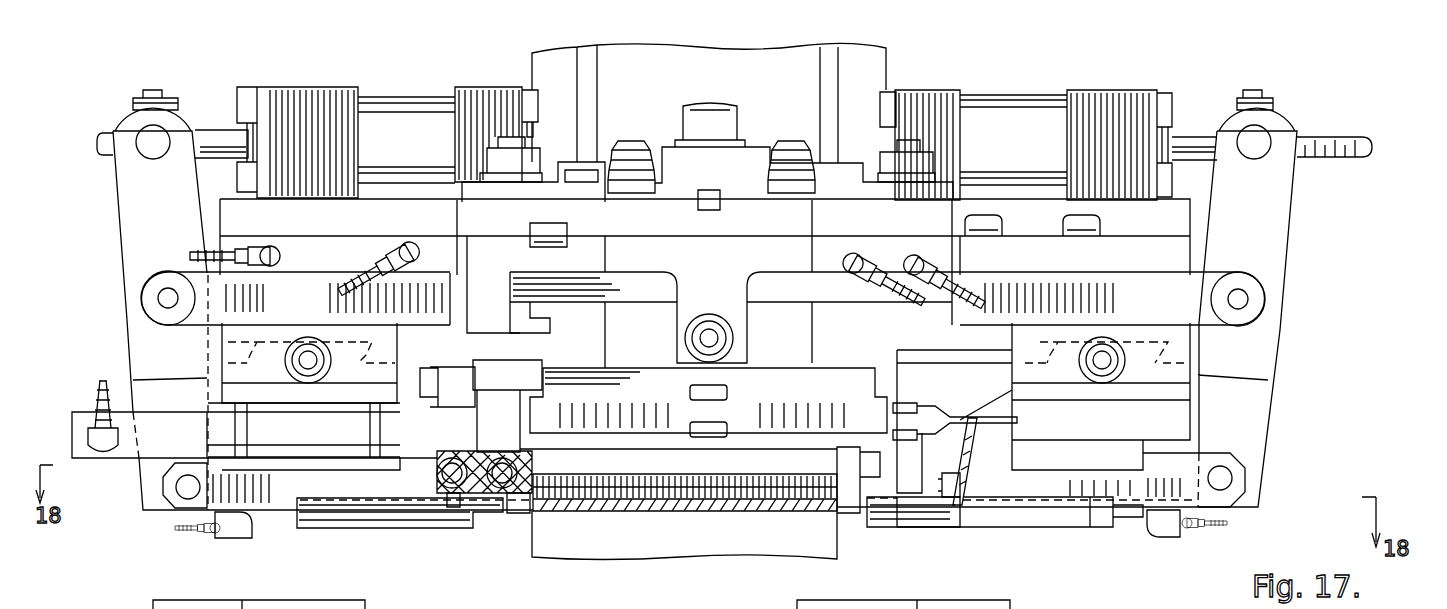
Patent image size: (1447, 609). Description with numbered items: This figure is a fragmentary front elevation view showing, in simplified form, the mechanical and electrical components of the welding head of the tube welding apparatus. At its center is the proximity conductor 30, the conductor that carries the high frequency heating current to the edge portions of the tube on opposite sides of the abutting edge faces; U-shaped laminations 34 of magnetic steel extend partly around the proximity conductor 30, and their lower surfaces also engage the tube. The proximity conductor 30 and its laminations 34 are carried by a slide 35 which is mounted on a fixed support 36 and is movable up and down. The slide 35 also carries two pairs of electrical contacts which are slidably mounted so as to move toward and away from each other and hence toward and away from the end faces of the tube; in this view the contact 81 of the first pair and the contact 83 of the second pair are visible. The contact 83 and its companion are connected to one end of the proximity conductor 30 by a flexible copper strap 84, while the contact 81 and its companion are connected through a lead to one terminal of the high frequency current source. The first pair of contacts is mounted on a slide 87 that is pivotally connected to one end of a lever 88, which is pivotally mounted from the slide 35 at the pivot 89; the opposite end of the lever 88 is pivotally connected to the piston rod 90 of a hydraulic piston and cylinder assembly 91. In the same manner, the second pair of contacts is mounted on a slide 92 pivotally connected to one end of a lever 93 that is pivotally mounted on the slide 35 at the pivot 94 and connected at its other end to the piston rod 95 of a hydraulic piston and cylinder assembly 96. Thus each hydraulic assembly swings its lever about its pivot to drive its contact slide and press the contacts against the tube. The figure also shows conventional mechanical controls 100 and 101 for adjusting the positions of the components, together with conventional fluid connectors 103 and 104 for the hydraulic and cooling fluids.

The proximity conductor 30 is at (873, 513).
The U-shaped laminations 34 is at (790, 476).
The slide 35 is at (826, 178).
The fixed support 36 is at (873, 72).
The electrical contact 81 is at (382, 528).
The electrical contact 83 is at (1000, 515).
The flexible copper strap 84 is at (968, 463).
The slide 87 is at (273, 504).
The lever 88 is at (150, 495).
The pivot 89 is at (160, 300).
The piston rod 90 is at (213, 137).
The hydraulic piston and cylinder assembly 91 is at (385, 128).
The slide 92 is at (1133, 500).
The lever 93 is at (1262, 448).
The pivot 94 is at (1248, 300).
The piston rod 95 is at (1193, 145).
The hydraulic piston and cylinder assembly 96 is at (1012, 128).
The control 100 is at (722, 302).
The control 101 is at (330, 366).
The fluid connector 103 is at (272, 251).
The fluid connector 104 is at (630, 145).